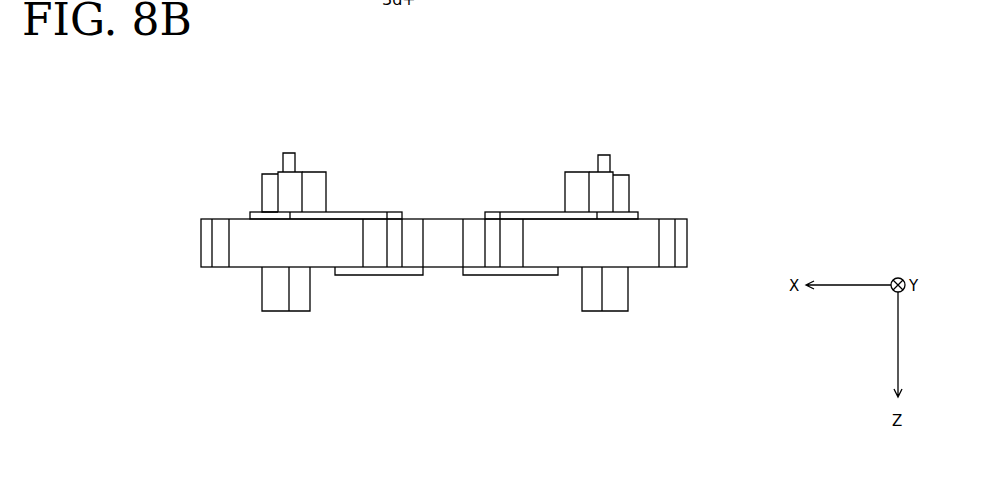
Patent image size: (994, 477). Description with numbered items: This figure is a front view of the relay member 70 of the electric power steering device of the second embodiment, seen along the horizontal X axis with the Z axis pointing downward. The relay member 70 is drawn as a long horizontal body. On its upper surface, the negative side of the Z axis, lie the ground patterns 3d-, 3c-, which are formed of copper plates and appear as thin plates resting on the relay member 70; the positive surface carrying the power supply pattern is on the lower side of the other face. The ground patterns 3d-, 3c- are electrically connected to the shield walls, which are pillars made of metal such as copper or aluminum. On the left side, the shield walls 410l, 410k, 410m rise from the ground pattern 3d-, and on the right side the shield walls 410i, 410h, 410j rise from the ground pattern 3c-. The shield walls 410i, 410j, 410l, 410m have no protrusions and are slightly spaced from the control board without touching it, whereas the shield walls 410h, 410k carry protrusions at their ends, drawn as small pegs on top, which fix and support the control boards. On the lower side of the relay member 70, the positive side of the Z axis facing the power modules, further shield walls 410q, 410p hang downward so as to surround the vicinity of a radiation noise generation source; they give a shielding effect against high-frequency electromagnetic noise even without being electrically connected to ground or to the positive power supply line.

The relay member 70 is at (690, 219).
The ground pattern 3d- is at (378, 212).
The ground pattern 3c- is at (537, 212).
The shield wall 410l is at (260, 172).
The shield wall 410k is at (284, 156).
The shield wall 410m is at (322, 171).
The shield wall 410i is at (577, 172).
The shield wall 410h is at (612, 155).
The shield wall 410j is at (631, 185).
The shield wall 410q is at (286, 316).
The shield wall 410p is at (607, 315).